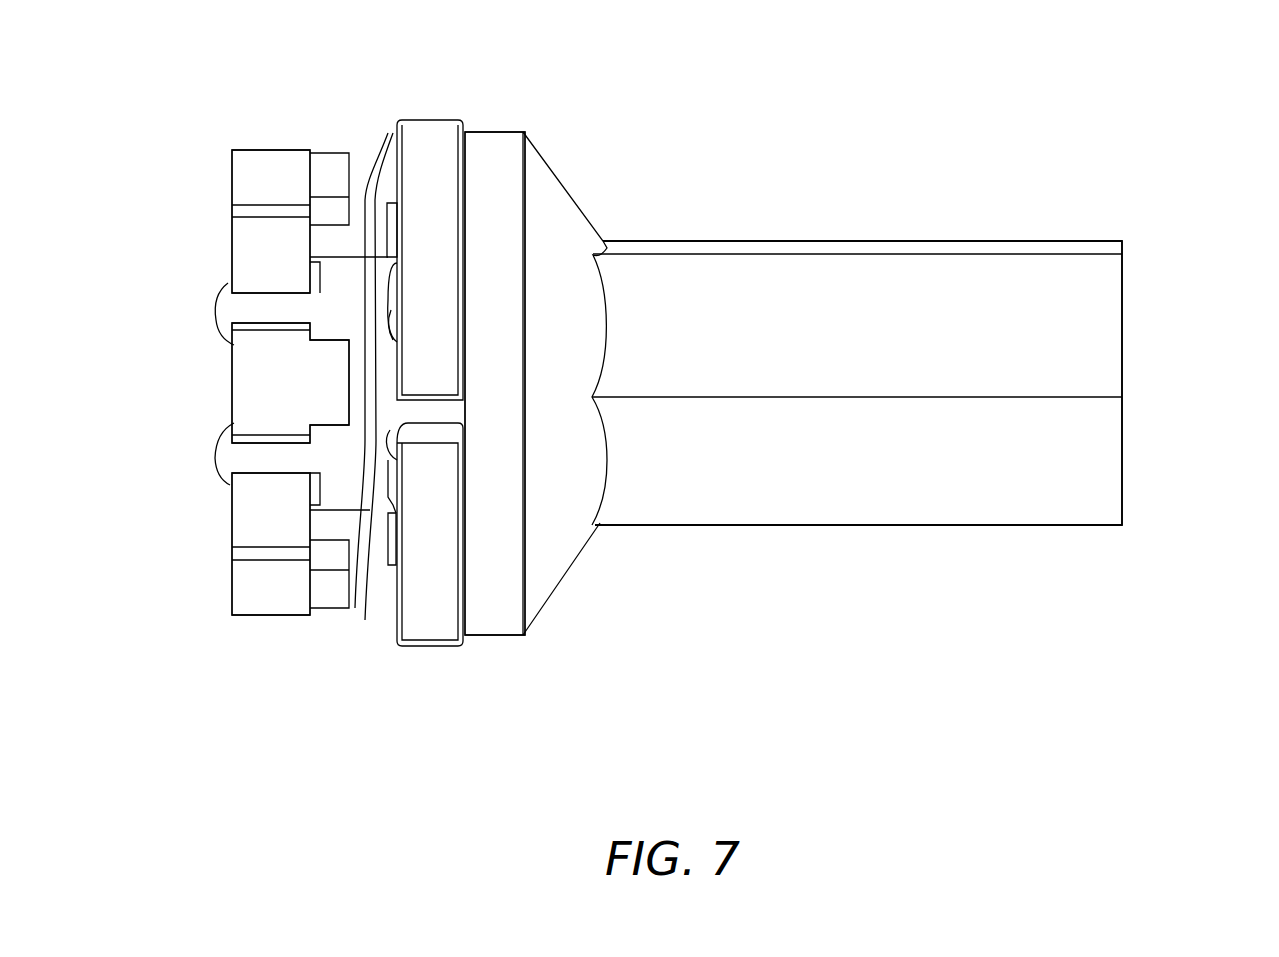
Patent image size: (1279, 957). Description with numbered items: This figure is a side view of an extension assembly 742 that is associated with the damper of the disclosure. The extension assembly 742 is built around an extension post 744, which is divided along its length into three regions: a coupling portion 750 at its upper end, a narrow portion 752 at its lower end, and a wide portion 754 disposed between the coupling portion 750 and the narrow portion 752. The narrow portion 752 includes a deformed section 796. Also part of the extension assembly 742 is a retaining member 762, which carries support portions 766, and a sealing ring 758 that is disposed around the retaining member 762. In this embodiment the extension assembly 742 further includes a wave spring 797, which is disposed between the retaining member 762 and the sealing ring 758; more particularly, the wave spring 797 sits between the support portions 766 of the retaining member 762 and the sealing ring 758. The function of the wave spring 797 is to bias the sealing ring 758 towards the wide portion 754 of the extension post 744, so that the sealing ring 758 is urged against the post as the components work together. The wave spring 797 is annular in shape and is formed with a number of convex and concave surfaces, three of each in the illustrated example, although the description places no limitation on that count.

The extension assembly 742 is at (1170, 132).
The extension post 744 is at (845, 220).
The coupling portion 750 is at (997, 565).
The narrow portion 752 is at (217, 268).
The wide portion 754 is at (483, 153).
The sealing ring 758 is at (437, 633).
The retaining member 762 is at (213, 153).
The support portions 766 is at (280, 167).
The deformed section 796 is at (226, 455).
The wave spring 797 is at (357, 608).